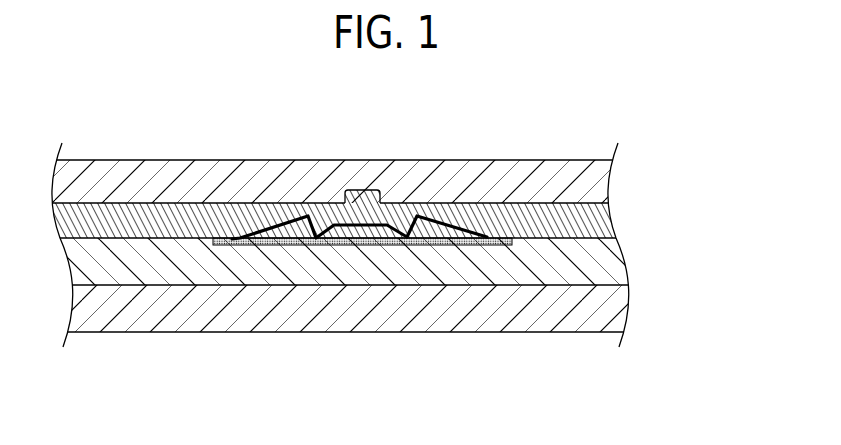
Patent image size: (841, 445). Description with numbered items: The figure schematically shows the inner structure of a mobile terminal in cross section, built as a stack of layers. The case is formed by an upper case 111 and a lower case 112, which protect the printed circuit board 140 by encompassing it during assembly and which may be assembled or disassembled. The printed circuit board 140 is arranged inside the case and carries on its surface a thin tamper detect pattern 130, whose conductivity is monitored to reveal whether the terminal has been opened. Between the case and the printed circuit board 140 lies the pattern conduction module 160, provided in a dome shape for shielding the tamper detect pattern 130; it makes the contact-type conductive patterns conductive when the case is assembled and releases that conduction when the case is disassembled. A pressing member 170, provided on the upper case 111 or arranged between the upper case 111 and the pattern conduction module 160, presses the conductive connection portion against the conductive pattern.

The upper case 111 is at (588, 183).
The lower case 112 is at (603, 310).
The printed circuit board 140 is at (605, 263).
The pressing member 170 is at (603, 220).
The pattern conduction module 160 is at (297, 203).
The tamper detect pattern 130 is at (402, 243).